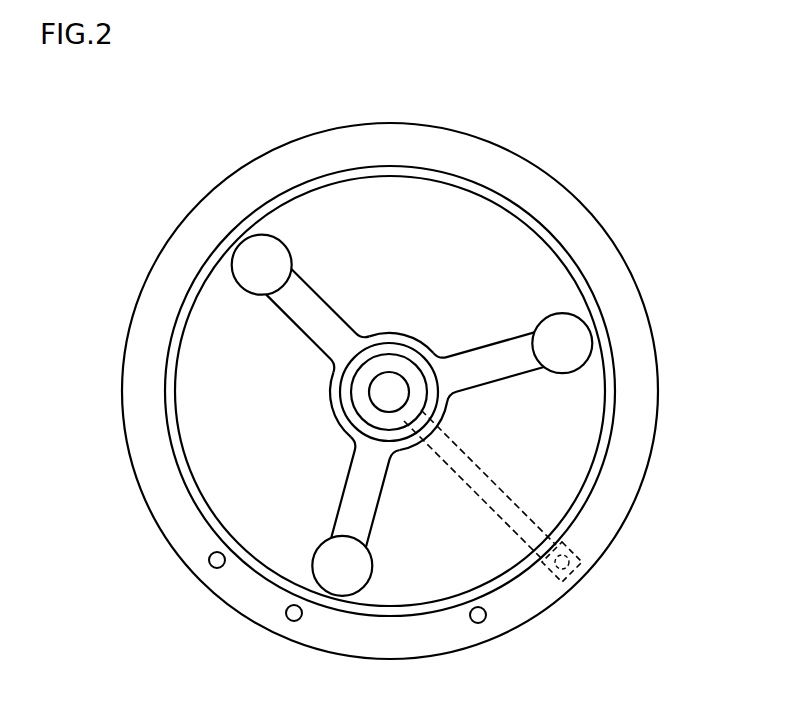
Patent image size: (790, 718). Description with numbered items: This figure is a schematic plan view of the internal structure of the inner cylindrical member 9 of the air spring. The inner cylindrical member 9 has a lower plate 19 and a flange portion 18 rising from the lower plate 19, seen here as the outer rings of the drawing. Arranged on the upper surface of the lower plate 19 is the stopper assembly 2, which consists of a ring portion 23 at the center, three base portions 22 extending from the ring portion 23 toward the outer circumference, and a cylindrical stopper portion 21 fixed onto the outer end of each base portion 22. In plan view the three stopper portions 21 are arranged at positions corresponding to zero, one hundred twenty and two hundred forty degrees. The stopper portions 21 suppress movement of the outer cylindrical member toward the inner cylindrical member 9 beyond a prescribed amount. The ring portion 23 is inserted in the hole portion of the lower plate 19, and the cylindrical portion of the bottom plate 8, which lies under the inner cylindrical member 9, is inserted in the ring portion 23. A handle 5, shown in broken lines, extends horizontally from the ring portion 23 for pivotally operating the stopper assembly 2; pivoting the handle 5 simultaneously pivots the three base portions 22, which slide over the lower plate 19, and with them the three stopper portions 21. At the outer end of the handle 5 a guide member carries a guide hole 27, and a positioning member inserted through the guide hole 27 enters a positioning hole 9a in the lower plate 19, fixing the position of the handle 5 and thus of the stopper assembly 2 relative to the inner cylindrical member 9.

The stopper assembly 2 is at (240, 80).
The handle 5 is at (541, 564).
The bottom plate 8 is at (418, 392).
The inner cylindrical member 9 is at (646, 121).
The positioning hole 9a is at (210, 568).
The flange portion 18 is at (215, 525).
The lower plate 19 is at (577, 440).
The stopper portion 21 is at (262, 252).
The base portion 22 is at (310, 305).
The ring portion 23 is at (381, 348).
The guide hole 27 is at (570, 556).